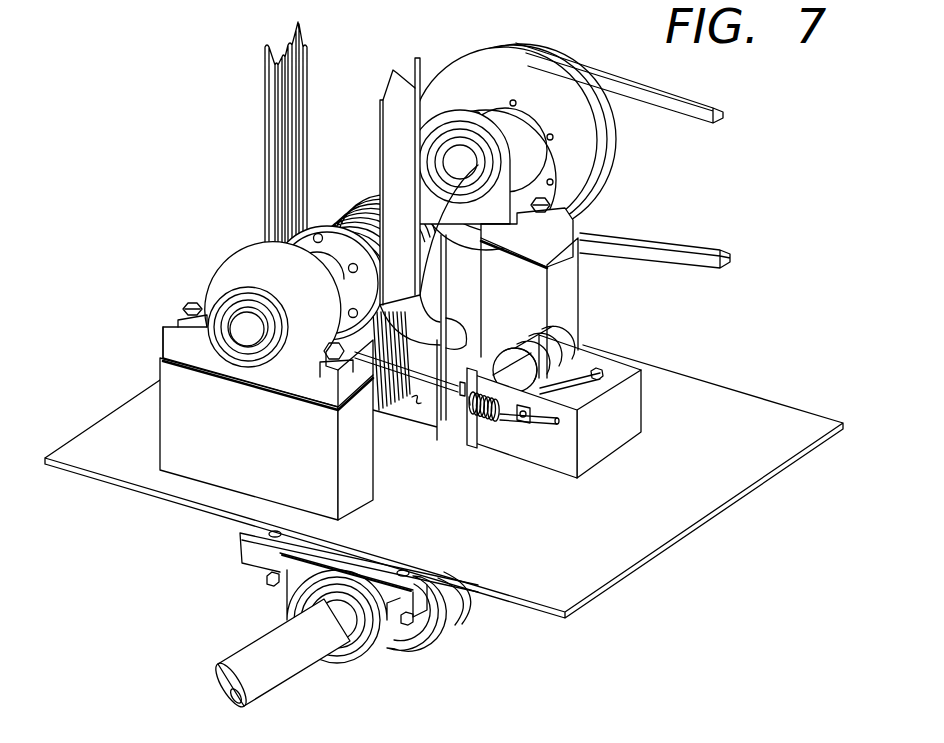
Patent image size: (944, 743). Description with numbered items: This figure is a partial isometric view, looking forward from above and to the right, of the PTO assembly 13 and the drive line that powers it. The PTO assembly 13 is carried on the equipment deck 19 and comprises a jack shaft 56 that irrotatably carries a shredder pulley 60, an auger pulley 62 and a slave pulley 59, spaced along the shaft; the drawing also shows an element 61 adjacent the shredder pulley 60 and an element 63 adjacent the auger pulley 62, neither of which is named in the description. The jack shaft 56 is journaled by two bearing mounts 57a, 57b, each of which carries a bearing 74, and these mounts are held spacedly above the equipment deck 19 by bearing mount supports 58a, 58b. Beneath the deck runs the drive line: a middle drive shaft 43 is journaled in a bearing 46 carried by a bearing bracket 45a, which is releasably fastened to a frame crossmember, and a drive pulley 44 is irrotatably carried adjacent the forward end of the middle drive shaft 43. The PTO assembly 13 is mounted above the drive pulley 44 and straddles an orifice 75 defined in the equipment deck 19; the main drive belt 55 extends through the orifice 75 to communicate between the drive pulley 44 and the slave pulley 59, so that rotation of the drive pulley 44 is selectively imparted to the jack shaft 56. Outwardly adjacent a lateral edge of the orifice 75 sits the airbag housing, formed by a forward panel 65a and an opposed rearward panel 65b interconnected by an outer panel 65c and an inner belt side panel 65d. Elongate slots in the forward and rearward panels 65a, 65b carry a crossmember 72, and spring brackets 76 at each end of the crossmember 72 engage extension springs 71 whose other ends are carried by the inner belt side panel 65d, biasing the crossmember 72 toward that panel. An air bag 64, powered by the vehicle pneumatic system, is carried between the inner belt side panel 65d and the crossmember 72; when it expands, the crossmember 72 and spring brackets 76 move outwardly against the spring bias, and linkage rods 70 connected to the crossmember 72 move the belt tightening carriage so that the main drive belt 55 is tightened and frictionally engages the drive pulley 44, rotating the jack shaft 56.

The PTO assembly 13 is at (160, 327).
The equipment deck 19 is at (748, 413).
The middle drive shaft 43 is at (262, 680).
The drive pulley 44 is at (417, 640).
The bearing bracket 45a is at (255, 560).
The bearing 46 is at (353, 653).
The main drive belt 55 is at (457, 330).
The jack shaft 56 is at (247, 337).
The bearing mount 57a is at (518, 247).
The bearing mount 57b is at (188, 347).
The bearing mount support 58a is at (563, 292).
The bearing mount support 58b is at (180, 443).
The slave pulley 59 is at (348, 182).
The shredder pulley 60 is at (293, 220).
The spline bars 61 is at (278, 168).
The auger pulley 62 is at (577, 155).
The bar 63 is at (630, 250).
The air bag 64 is at (537, 360).
The forward panel 65a is at (615, 378).
The rearward panel 65b is at (543, 457).
The outer panel 65c is at (590, 457).
The inner belt side panel 65d is at (447, 430).
The linkage rod 70 is at (442, 357).
The extension spring 71 is at (497, 423).
The crossmember 72 is at (577, 387).
The bearing 74 is at (240, 297).
The orifice 75 is at (418, 402).
The spring bracket 76 is at (518, 425).